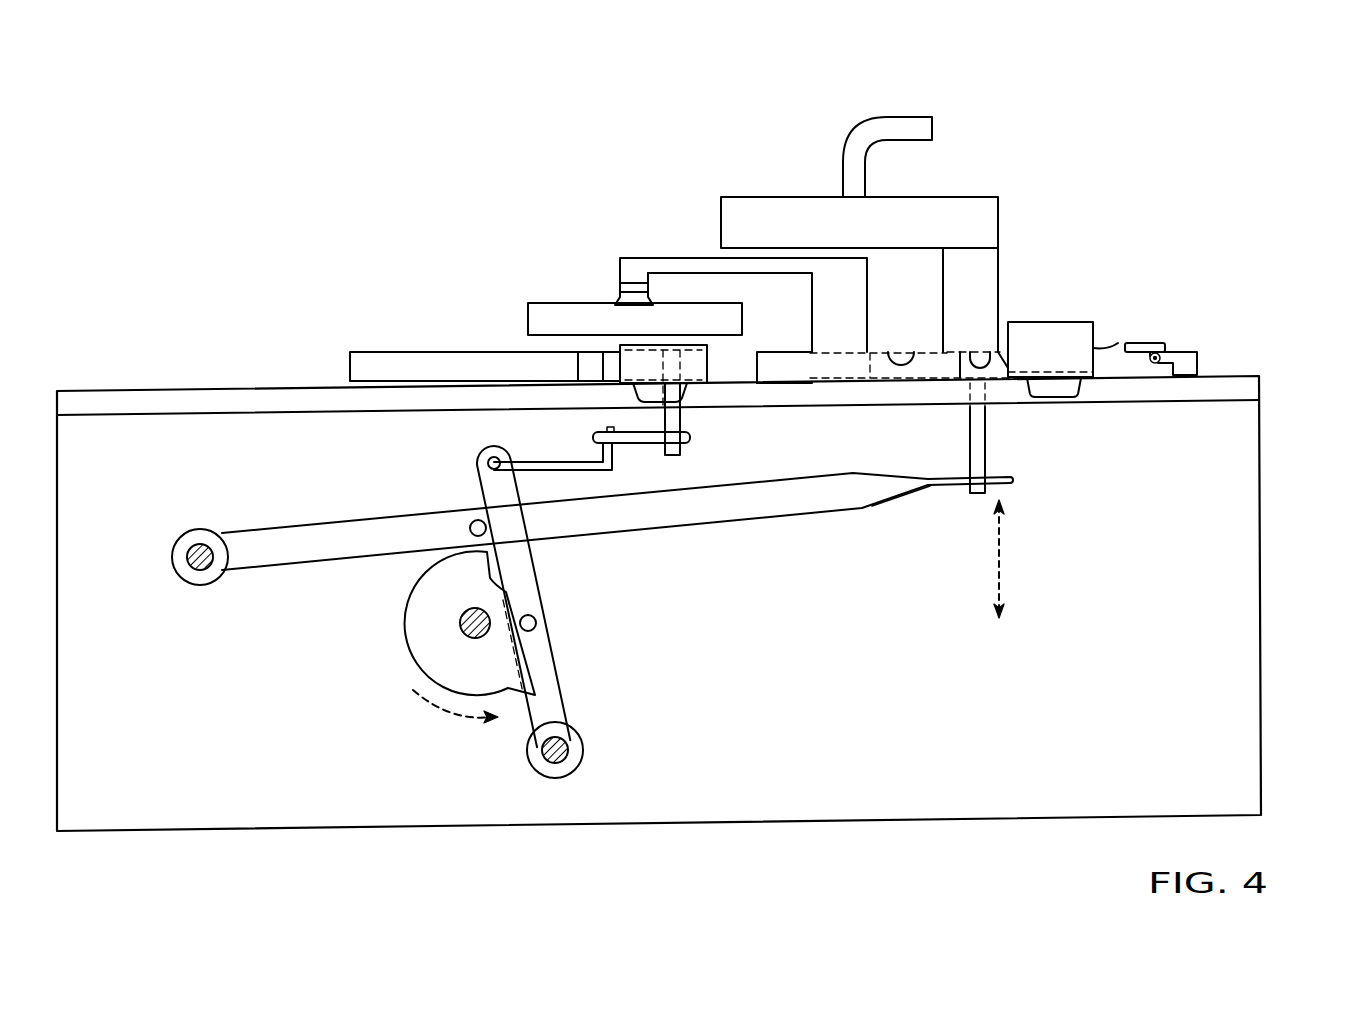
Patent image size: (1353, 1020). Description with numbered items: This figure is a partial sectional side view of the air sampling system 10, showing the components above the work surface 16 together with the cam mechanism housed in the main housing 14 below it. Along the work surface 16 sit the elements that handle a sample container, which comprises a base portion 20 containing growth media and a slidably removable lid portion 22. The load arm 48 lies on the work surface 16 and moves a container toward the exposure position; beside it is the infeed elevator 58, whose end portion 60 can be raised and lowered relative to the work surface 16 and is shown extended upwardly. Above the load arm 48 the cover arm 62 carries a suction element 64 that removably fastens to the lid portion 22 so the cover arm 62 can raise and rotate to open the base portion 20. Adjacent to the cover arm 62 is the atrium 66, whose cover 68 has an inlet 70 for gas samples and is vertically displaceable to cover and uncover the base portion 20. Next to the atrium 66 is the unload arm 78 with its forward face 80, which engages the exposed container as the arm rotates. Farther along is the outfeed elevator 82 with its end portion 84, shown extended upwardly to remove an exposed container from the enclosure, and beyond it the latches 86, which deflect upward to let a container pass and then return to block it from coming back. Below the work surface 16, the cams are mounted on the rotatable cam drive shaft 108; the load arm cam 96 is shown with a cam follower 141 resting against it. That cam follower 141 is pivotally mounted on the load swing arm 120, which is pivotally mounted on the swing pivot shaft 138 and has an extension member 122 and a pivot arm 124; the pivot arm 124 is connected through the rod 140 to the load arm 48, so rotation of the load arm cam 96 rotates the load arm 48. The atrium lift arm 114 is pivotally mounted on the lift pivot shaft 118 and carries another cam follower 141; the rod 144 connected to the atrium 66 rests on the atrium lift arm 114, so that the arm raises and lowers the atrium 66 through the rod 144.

The air sampling system 10 is at (1210, 168).
The main housing 14 is at (1262, 477).
The work surface 16 is at (1232, 375).
The base portion 20 is at (750, 372).
The lid portion 22 is at (527, 323).
The load arm 48 is at (380, 353).
The infeed elevator 58 is at (708, 350).
The end portion 60 is at (670, 345).
The cover arm 62 is at (685, 260).
The suction element 64 is at (618, 300).
The atrium 66 is at (1000, 242).
The cover 68 is at (968, 195).
The inlet 70 is at (913, 116).
The unload arm 78 is at (972, 350).
The forward face 80 is at (913, 347).
The outfeed elevator 82 is at (1095, 348).
The end portion 84 is at (1050, 322).
The latches 86 is at (1148, 350).
The load arm cam 96 is at (407, 653).
The cam drive shaft 108 is at (462, 620).
The atrium lift arm 114 is at (293, 525).
The lift pivot shaft 118 is at (200, 587).
The load swing arm 120 is at (558, 672).
The extension member 122 is at (512, 452).
The pivot arm 124 is at (643, 432).
The swing pivot shaft 138 is at (540, 748).
The rod 140 is at (685, 420).
The cam follower 141 is at (472, 517).
The rod 144 is at (987, 440).